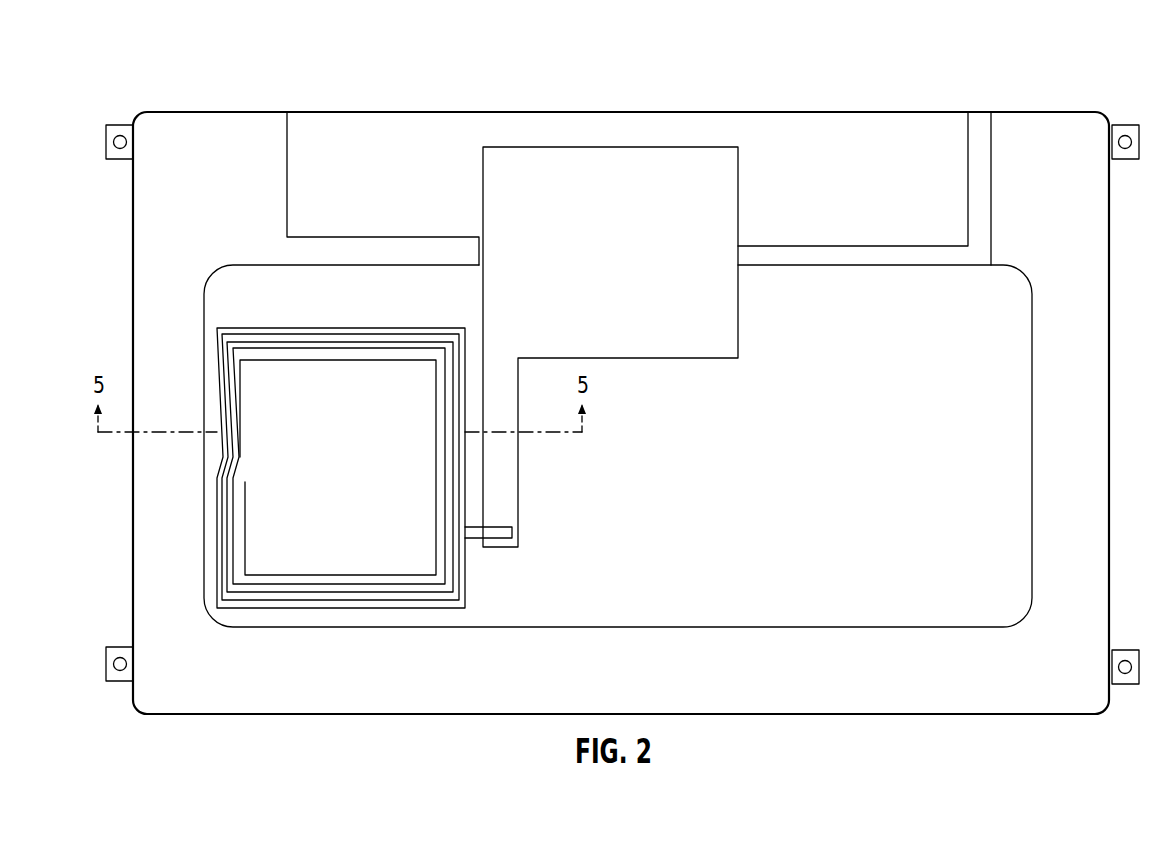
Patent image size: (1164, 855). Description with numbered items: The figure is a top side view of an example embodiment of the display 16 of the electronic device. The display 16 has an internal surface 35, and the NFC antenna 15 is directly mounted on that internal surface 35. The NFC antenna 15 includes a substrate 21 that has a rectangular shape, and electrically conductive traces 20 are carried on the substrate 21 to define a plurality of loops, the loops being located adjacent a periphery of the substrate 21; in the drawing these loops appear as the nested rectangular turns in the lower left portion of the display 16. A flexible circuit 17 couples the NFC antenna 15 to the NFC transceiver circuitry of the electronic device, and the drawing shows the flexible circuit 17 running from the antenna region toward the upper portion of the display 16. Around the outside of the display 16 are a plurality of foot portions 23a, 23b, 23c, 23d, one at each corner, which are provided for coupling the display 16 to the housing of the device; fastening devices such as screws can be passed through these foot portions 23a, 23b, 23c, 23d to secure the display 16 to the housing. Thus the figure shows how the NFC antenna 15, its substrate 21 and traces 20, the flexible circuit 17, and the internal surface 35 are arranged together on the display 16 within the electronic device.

The display 16 is at (491, 108).
The NFC antenna 15 is at (352, 458).
The flexible circuit 17 is at (513, 485).
The electrically conductive traces 20 is at (257, 593).
The substrate 21 is at (463, 607).
The internal surface 35 is at (760, 596).
The foot portion 23a is at (118, 124).
The foot portion 23b is at (1125, 124).
The foot portion 23c is at (1131, 686).
The foot portion 23d is at (108, 683).